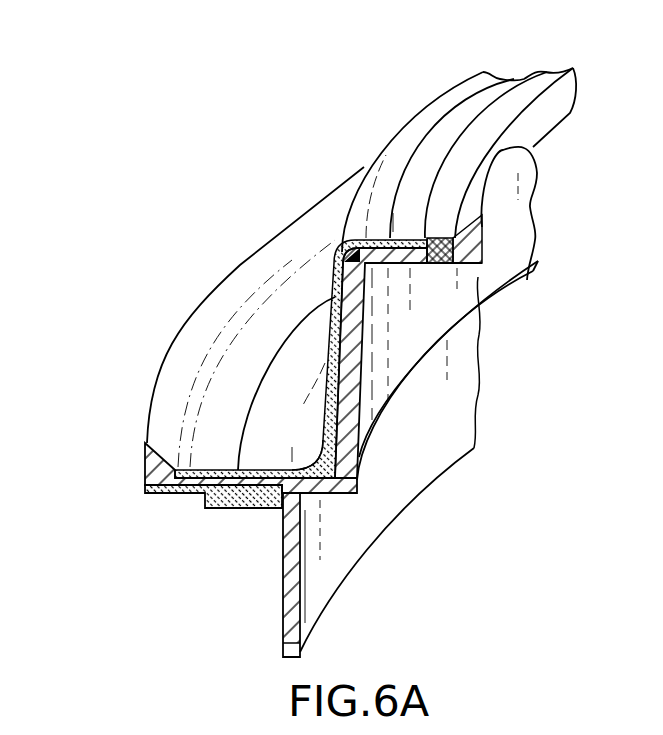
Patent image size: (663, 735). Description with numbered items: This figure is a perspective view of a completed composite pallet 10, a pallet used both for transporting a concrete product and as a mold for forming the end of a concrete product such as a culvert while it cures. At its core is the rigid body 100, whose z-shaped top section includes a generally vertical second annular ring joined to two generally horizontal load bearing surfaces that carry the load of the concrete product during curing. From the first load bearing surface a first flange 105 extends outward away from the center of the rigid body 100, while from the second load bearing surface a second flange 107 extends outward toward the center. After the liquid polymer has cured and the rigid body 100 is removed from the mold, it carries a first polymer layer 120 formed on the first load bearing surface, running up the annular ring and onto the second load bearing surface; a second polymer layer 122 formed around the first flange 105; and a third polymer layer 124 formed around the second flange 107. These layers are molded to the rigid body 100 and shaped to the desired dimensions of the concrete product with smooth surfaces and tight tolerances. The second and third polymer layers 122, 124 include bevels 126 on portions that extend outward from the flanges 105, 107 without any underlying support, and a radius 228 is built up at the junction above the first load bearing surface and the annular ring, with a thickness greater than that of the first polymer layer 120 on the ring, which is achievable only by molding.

The composite pallet 10 is at (100, 195).
The rigid body 100 is at (438, 450).
The first flange 105 is at (187, 493).
The second flange 107 is at (457, 263).
The first polymer layer 120 is at (333, 336).
The second polymer layer 122 is at (215, 403).
The third polymer layer 124 is at (522, 97).
The bevels 126 is at (145, 457).
The radius 228 is at (330, 480).